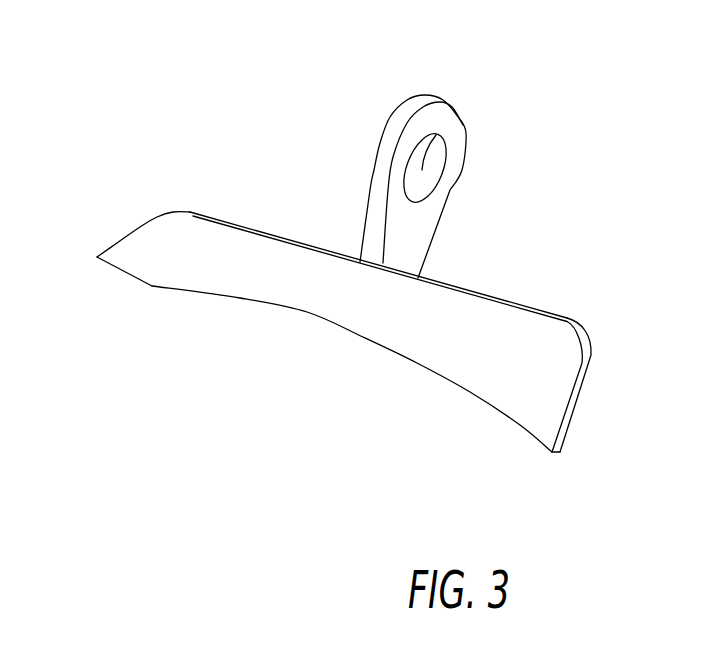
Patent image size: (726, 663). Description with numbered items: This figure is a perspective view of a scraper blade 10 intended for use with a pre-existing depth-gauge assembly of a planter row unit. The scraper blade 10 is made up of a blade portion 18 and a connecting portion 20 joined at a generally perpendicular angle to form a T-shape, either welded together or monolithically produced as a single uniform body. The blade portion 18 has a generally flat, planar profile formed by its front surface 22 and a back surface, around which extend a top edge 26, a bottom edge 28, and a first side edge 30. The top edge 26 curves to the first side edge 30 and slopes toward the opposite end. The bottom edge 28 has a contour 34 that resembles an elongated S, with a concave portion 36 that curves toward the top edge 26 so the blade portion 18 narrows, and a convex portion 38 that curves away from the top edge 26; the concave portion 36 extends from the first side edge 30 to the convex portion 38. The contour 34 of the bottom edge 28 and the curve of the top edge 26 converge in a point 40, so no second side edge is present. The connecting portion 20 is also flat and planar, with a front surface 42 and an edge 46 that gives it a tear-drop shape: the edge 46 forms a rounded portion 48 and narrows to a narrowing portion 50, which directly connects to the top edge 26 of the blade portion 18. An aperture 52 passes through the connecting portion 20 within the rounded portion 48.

The scraper blade 10 is at (573, 165).
The blade portion 18 is at (547, 397).
The connecting portion 20 is at (430, 215).
The front surface 22 is at (352, 311).
The top edge 26 is at (488, 297).
The bottom edge 28 is at (417, 363).
The first side edge 30 is at (582, 370).
The contour 34 is at (306, 332).
The concave portion 36 is at (246, 300).
The convex portion 38 is at (118, 268).
The point 40 is at (95, 257).
The front surface 42 is at (417, 253).
The edge 46 is at (465, 127).
The rounded portion 48 is at (413, 137).
The narrowing portion 50 is at (393, 220).
The aperture 52 is at (450, 105).